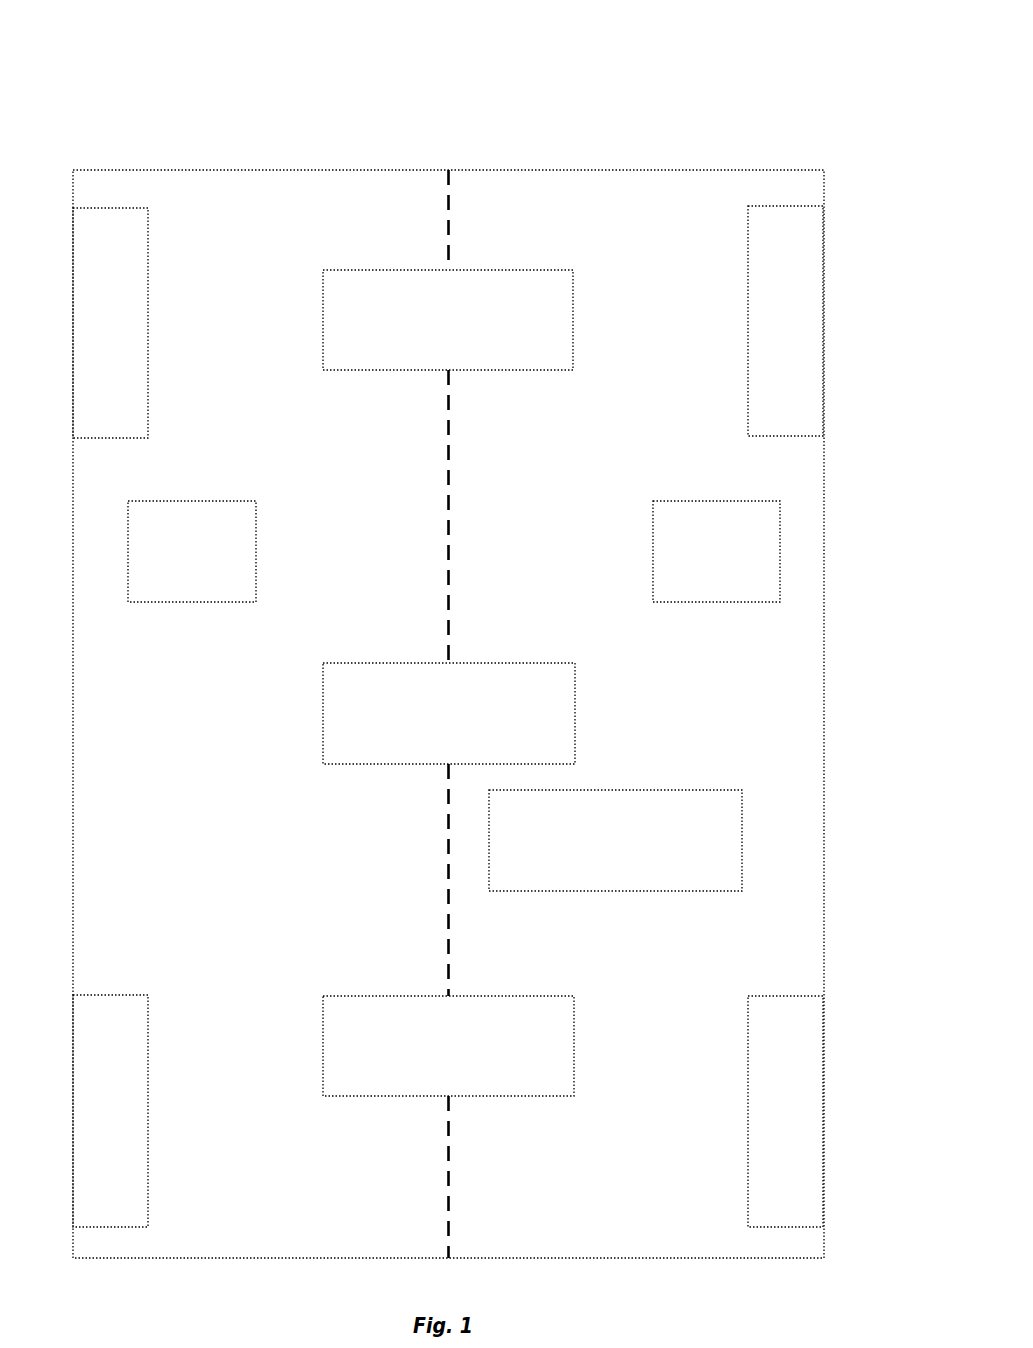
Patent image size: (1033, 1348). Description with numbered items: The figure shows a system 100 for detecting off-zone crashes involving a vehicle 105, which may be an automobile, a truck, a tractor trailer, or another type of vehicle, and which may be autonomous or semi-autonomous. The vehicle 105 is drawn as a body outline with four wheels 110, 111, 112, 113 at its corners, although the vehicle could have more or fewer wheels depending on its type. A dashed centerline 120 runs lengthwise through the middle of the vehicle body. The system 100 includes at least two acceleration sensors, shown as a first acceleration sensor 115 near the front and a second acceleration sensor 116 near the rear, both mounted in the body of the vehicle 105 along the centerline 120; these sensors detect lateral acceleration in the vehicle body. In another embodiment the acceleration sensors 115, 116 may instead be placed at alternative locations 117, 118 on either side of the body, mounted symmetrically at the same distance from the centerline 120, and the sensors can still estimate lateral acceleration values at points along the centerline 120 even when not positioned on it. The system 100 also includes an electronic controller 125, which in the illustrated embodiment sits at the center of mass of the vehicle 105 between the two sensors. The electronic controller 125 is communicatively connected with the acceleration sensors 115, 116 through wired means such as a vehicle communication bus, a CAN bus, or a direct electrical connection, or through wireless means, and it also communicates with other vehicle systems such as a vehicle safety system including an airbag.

The system 100 is at (448, 96).
The vehicle 105 is at (538, 170).
The wheel 110 is at (148, 275).
The wheel 111 is at (748, 268).
The wheel 112 is at (749, 1033).
The wheel 113 is at (102, 995).
The first acceleration sensor 115 is at (503, 270).
The second acceleration sensor 116 is at (523, 996).
The alternative location 117 is at (247, 501).
The alternative location 118 is at (758, 502).
The centerline 120 is at (453, 512).
The electronic controller 125 is at (503, 663).